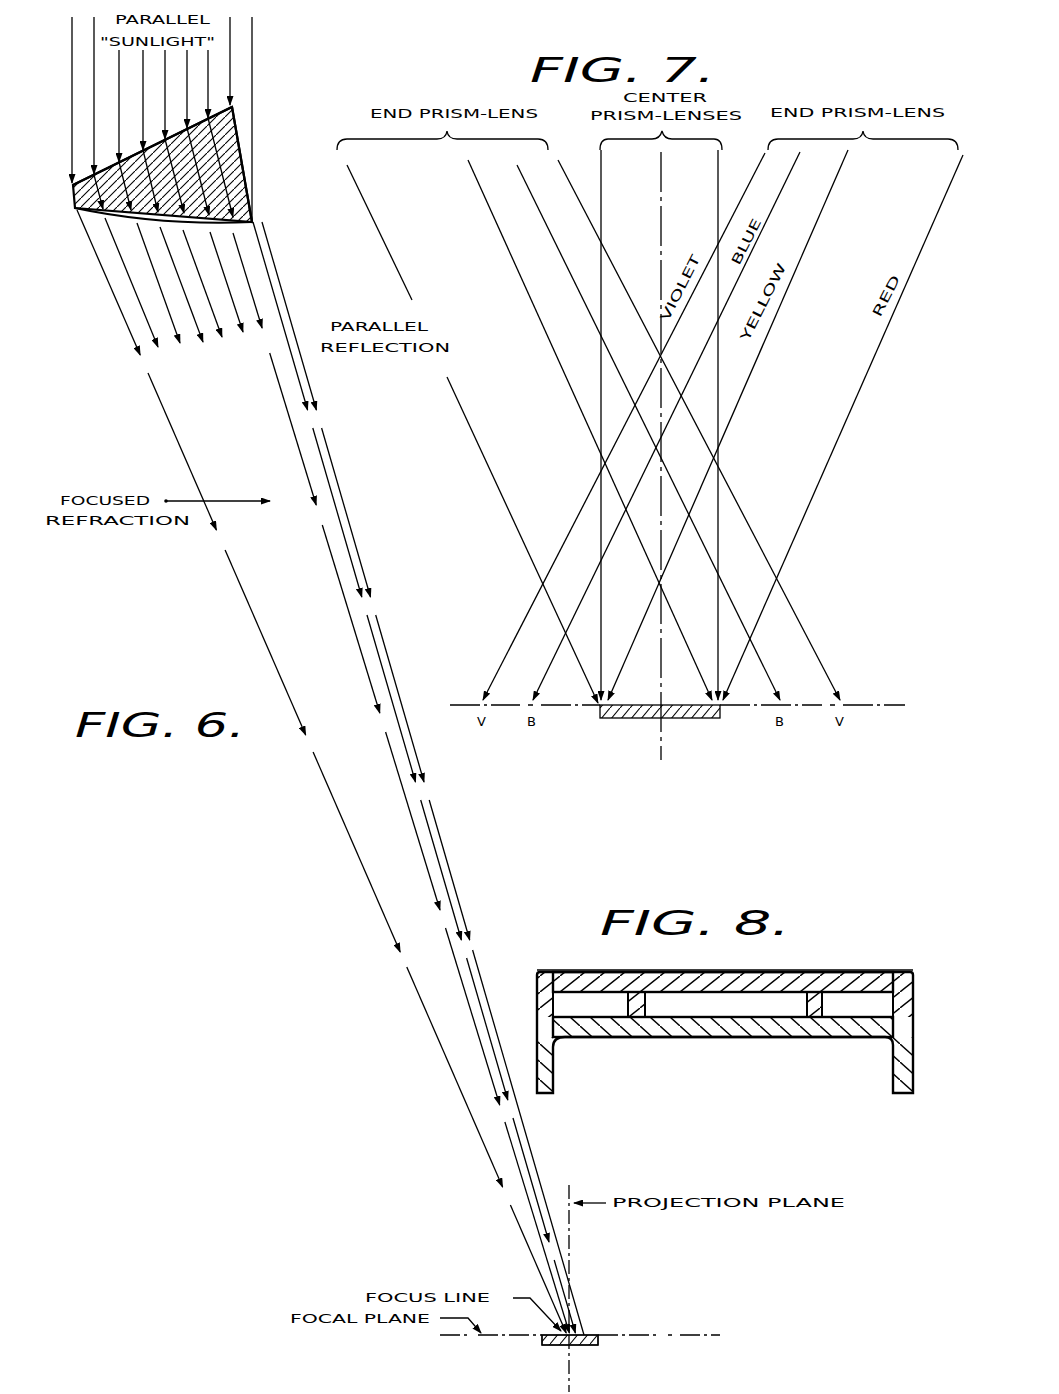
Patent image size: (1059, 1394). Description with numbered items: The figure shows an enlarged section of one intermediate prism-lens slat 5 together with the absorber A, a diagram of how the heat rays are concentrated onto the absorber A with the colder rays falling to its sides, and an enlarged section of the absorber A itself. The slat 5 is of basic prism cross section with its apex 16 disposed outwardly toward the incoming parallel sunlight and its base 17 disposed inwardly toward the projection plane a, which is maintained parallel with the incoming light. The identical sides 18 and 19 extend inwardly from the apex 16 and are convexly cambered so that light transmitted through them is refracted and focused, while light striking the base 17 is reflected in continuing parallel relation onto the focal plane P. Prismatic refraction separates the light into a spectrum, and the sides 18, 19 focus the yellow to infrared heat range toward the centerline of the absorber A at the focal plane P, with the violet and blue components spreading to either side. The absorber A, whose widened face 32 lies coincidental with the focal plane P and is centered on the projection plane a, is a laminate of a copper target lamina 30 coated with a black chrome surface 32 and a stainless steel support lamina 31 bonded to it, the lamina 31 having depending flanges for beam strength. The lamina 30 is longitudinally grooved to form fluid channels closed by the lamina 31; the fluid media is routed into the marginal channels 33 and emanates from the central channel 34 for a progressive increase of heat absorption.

In FIG. 6, the prism-lens 5 is at (77, 212).
In FIG. 6, the apex 16 is at (72, 197).
In FIG. 6, the base 17 is at (60, 200).
In FIG. 6, the side 18 is at (232, 100).
In FIG. 6, the side 19 is at (226, 224).
In FIG. 8, the target lamina 30 is at (581, 982).
In FIG. 8, the support lamina 31 is at (623, 1030).
In FIG. 6, the black chrome surface 32 is at (588, 1330).
In FIG. 8, the black chrome surface 32 is at (722, 982).
In FIG. 8, the marginal channels 33 is at (563, 1008).
In FIG. 8, the central channel 34 is at (740, 1006).
In FIG. 6, the absorber A is at (600, 1330).
In FIG. 7, the absorber A is at (725, 713).
In FIG. 8, the absorber A is at (873, 968).
In FIG. 6, the focal plane P is at (706, 1332).
In FIG. 7, the focal plane P is at (886, 702).
In FIG. 7, the projection plane a is at (664, 182).